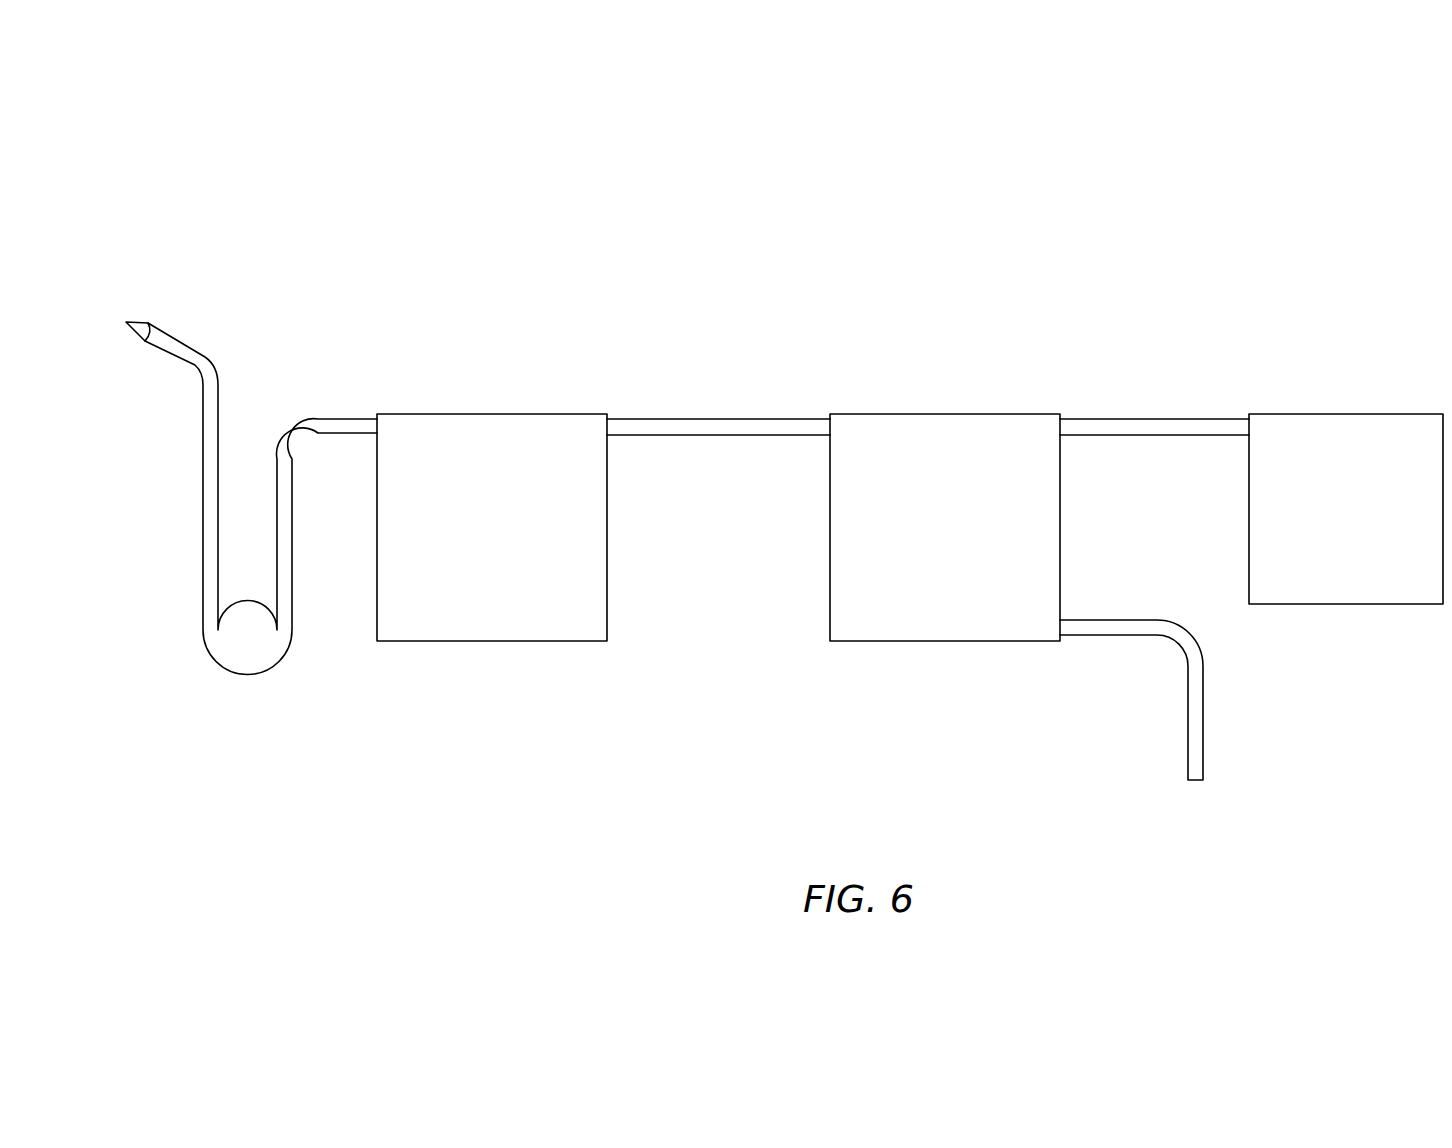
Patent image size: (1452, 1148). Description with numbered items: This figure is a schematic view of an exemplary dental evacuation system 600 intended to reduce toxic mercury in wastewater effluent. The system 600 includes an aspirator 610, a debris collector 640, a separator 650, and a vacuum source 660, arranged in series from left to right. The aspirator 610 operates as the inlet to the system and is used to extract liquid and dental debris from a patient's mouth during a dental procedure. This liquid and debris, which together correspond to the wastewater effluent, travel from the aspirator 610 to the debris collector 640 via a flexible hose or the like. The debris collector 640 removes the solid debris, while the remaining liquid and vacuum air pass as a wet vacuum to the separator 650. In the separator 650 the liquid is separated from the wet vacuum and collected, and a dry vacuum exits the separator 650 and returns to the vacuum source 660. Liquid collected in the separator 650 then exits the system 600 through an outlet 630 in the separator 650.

The dental evacuation system 600 is at (280, 150).
The aspirator 610 is at (172, 328).
The outlet 630 is at (1205, 752).
The debris collector 640 is at (480, 414).
The separator 650 is at (947, 414).
The vacuum source 660 is at (1344, 414).